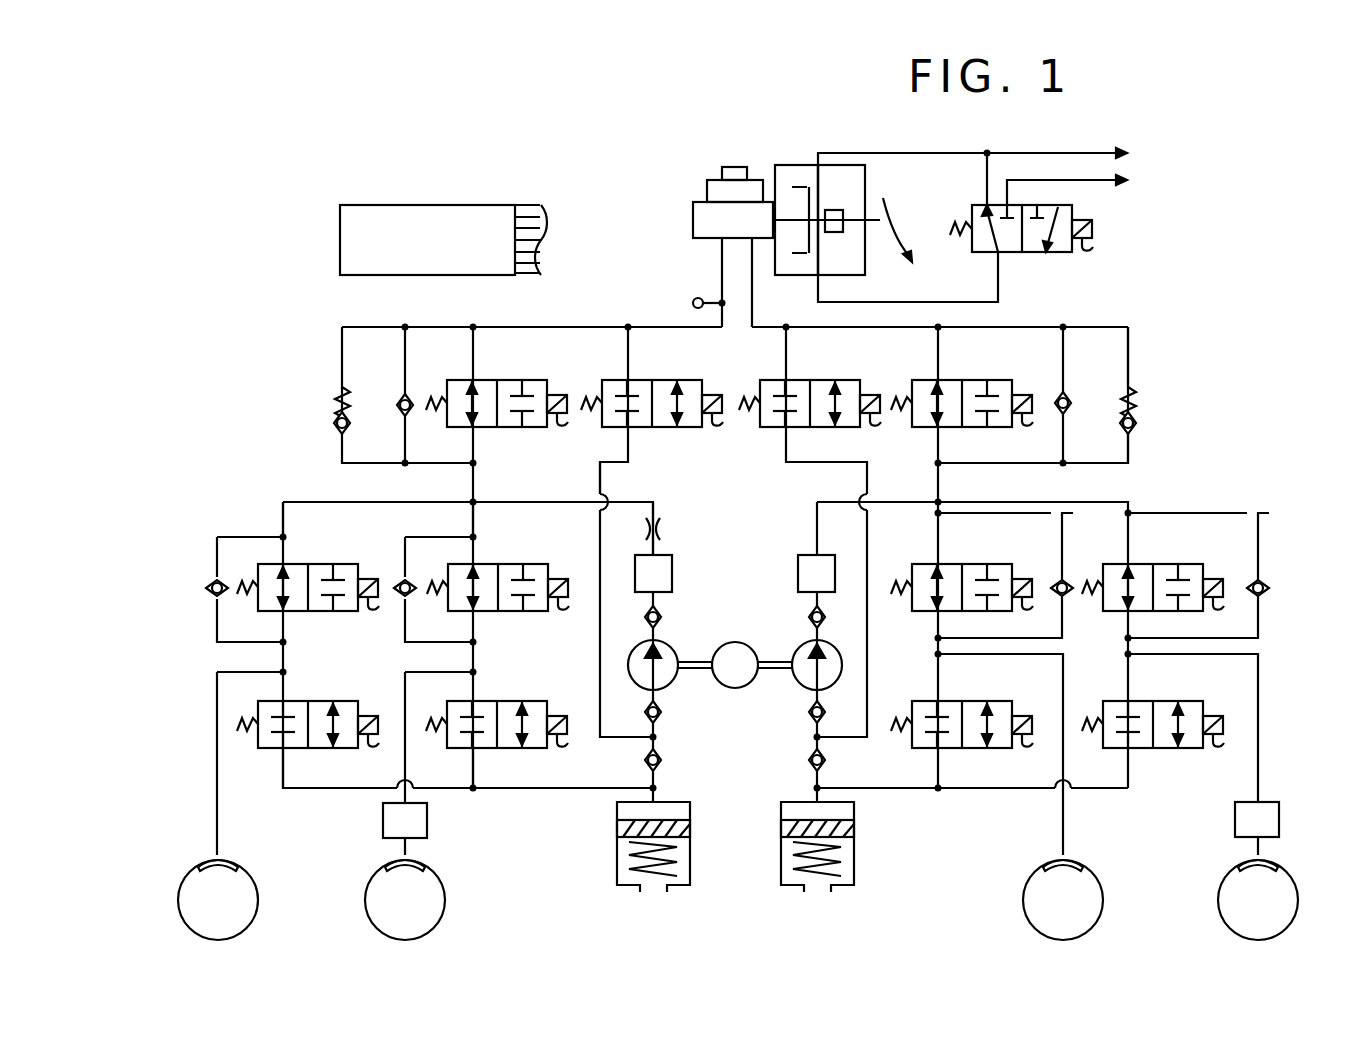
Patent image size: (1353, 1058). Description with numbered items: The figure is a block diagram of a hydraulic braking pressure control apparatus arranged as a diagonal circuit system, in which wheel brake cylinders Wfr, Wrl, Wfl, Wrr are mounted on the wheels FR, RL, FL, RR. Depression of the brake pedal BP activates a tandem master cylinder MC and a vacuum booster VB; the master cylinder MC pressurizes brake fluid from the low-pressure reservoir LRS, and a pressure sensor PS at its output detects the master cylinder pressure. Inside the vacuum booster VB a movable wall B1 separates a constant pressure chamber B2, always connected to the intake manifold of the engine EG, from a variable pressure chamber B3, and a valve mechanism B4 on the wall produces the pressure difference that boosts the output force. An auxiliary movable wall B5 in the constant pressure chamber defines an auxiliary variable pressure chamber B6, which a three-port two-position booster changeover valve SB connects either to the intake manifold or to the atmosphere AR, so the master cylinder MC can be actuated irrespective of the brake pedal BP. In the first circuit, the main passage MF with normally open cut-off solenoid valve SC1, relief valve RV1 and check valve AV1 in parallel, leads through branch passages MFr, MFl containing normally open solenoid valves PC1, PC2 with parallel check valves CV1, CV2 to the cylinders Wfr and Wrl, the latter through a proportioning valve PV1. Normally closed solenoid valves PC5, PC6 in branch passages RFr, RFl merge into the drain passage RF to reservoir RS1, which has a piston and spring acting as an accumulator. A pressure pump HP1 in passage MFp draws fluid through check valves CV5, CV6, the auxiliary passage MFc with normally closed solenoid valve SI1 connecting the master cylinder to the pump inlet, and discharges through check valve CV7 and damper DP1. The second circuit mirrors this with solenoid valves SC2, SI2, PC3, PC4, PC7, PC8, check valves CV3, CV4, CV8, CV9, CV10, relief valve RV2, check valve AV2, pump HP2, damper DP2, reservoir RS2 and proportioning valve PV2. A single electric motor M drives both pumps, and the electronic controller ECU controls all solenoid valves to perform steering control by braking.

The master cylinder MC is at (693, 213).
The low-pressure reservoir LRS is at (707, 183).
The pressure sensor PS is at (693, 302).
The vacuum booster VB is at (772, 170).
The movable wall B1 is at (843, 276).
The constant pressure chamber B2 is at (791, 172).
The variable pressure chamber B3 is at (857, 250).
The valve mechanism B4 is at (843, 212).
The auxiliary movable wall B5 is at (813, 187).
The auxiliary variable pressure chamber B6 is at (813, 248).
The brake pedal BP is at (893, 223).
The engine EG is at (1071, 153).
The atmosphere AR is at (1081, 187).
The booster changeover valve SB is at (1022, 252).
The electronic controller ECU is at (443, 240).
The relief valve RV1 is at (332, 404).
The relief valve RV2 is at (1134, 410).
The check valve AV1 is at (396, 408).
The check valve AV2 is at (1085, 400).
The first solenoid valve SC1 is at (497, 380).
The first switching valve SC2 is at (963, 380).
The second solenoid valve SI1 is at (653, 380).
The second switching valve SI2 is at (811, 380).
The main passage MF is at (473, 497).
The branch passage MFr is at (285, 526).
The branch passage MFl is at (475, 527).
The auxiliary passage MFc is at (602, 494).
The passage MFp is at (655, 519).
The check valve CV1 is at (218, 581).
The check valve CV2 is at (406, 581).
The check valve CV3 is at (1060, 582).
The check valve CV4 is at (1256, 582).
The check valve CV5 is at (661, 760).
The check valve CV6 is at (661, 712).
The check valve CV7 is at (661, 617).
The check valve CV8 is at (809, 760).
The check valve CV9 is at (809, 712).
The check valve CV10 is at (809, 617).
The solenoid valve PC1 is at (309, 564).
The solenoid valve PC2 is at (499, 564).
The solenoid valve PC3 is at (963, 564).
The solenoid valve PC4 is at (1154, 564).
The solenoid valve PC5 is at (309, 701).
The solenoid valve PC6 is at (498, 701).
The solenoid valve PC7 is at (963, 701).
The solenoid valve PC8 is at (1154, 701).
The damper DP1 is at (672, 573).
The damper DP2 is at (798, 573).
The hydraulic pressure pump HP1 is at (665, 650).
The pressure pump HP2 is at (800, 650).
The electric motor M is at (735, 665).
The branch passage RFr is at (323, 790).
The branch passage RFl is at (476, 768).
The drain passage RF is at (505, 793).
The reservoir RS1 is at (617, 826).
The reservoir RS2 is at (854, 826).
The proportioning valve PV1 is at (427, 821).
The proportioning valve PV2 is at (1235, 821).
The wheel brake cylinder Wfr is at (200, 860).
The wheel brake cylinder Wrl is at (387, 860).
The wheel brake cylinder Wfl is at (1081, 860).
The wheel brake cylinder Wrr is at (1276, 860).
The front right wheel FR is at (218, 900).
The rear left wheel RL is at (405, 900).
The front left wheel FL is at (1063, 900).
The rear right wheel RR is at (1258, 900).